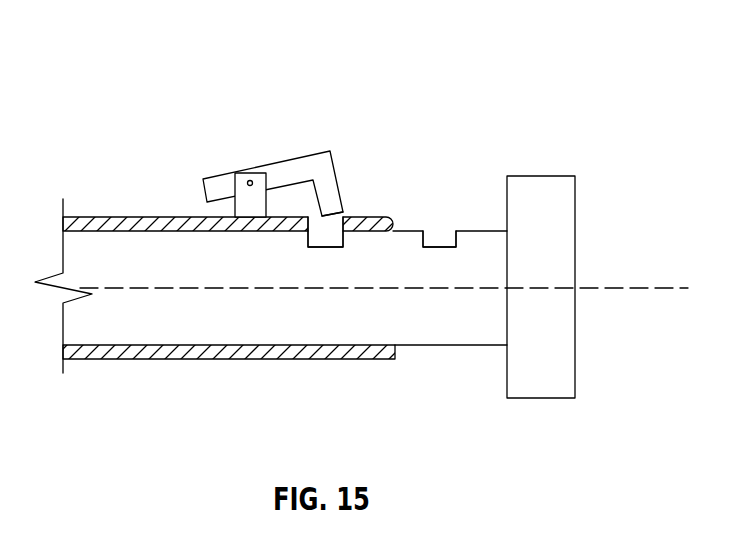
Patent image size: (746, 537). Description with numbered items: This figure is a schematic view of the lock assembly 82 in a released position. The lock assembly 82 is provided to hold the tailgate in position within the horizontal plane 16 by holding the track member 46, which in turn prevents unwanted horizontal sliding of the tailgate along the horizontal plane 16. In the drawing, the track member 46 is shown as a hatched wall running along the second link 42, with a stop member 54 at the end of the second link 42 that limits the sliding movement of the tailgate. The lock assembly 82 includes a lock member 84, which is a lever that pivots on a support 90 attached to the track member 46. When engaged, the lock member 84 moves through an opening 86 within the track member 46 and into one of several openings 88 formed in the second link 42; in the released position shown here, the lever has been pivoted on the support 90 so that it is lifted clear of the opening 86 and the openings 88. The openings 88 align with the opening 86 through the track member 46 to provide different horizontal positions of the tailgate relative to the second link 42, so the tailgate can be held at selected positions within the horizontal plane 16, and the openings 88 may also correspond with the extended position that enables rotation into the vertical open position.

The horizontal plane 16 is at (655, 287).
The second link 42 is at (443, 323).
The track member 46 is at (391, 219).
The stop member 54 is at (540, 176).
The lock assembly 82 is at (290, 118).
The lock member 84 is at (291, 172).
The opening 86 is at (350, 211).
The openings 88 is at (311, 252).
The support 90 is at (241, 183).